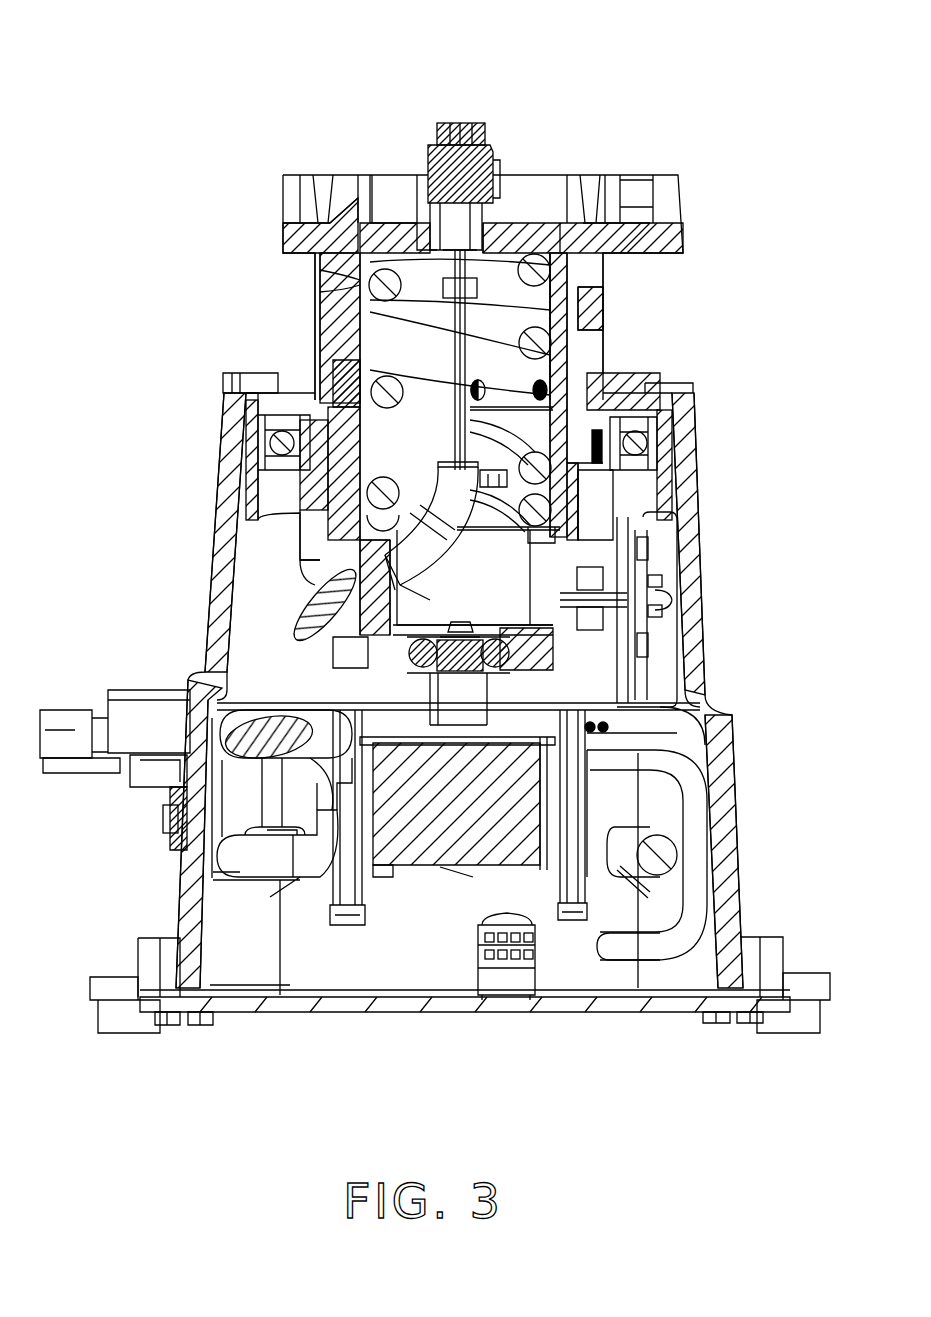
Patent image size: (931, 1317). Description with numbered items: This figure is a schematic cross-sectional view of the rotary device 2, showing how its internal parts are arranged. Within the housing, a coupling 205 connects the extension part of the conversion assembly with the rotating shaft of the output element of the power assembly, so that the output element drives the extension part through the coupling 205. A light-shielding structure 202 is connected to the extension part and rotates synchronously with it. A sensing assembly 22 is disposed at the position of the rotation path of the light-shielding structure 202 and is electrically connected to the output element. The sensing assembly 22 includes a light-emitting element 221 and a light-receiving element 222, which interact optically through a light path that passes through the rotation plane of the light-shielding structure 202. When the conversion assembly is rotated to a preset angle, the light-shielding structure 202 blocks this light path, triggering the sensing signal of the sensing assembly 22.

The rotary device 2 is at (460, 38).
The sensing assembly 22 is at (75, 591).
The light-emitting element 221 is at (570, 573).
The light-receiving element 222 is at (566, 614).
The light-shielding structure 202 is at (655, 600).
The coupling 205 is at (500, 672).